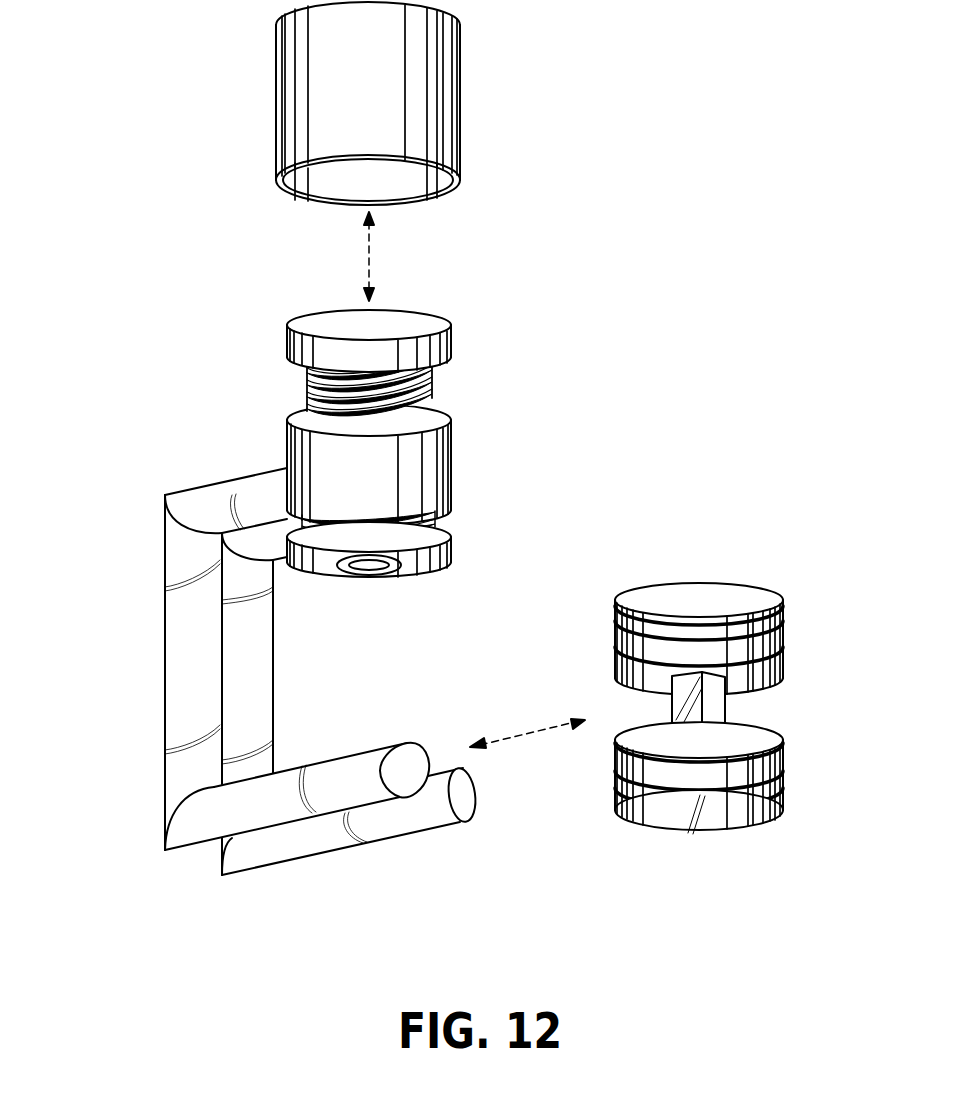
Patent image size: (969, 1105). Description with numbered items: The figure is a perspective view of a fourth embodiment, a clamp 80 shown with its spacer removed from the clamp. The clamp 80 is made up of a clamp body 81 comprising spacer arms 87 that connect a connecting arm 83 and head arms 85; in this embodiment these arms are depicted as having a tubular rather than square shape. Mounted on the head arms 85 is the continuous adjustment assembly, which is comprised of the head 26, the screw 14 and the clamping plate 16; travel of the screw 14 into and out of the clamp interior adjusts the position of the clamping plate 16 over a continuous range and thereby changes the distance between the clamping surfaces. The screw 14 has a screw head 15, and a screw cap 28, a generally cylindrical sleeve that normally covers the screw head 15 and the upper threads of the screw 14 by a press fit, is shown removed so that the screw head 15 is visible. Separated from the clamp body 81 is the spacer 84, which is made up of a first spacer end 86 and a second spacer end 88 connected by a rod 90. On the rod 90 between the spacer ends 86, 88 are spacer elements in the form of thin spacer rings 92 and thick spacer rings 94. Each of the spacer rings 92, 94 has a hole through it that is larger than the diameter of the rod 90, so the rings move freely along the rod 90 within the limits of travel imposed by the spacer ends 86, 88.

The clamp 80 is at (150, 304).
The screw cap 28 is at (460, 80).
The screw head 15 is at (451, 345).
The screw 14 is at (432, 392).
The head 26 is at (451, 468).
The clamping plate 16 is at (451, 557).
The clamp body 81 is at (150, 484).
The connecting arm 83 is at (165, 672).
The head arms 85 is at (215, 478).
The spacer arms 87 is at (341, 843).
The spacer 84 is at (800, 544).
The first spacer end 86 is at (783, 613).
The second spacer end 88 is at (783, 810).
The rod 90 is at (725, 708).
The thin spacer rings 92 is at (783, 627).
The thick spacer rings 94 is at (783, 650).